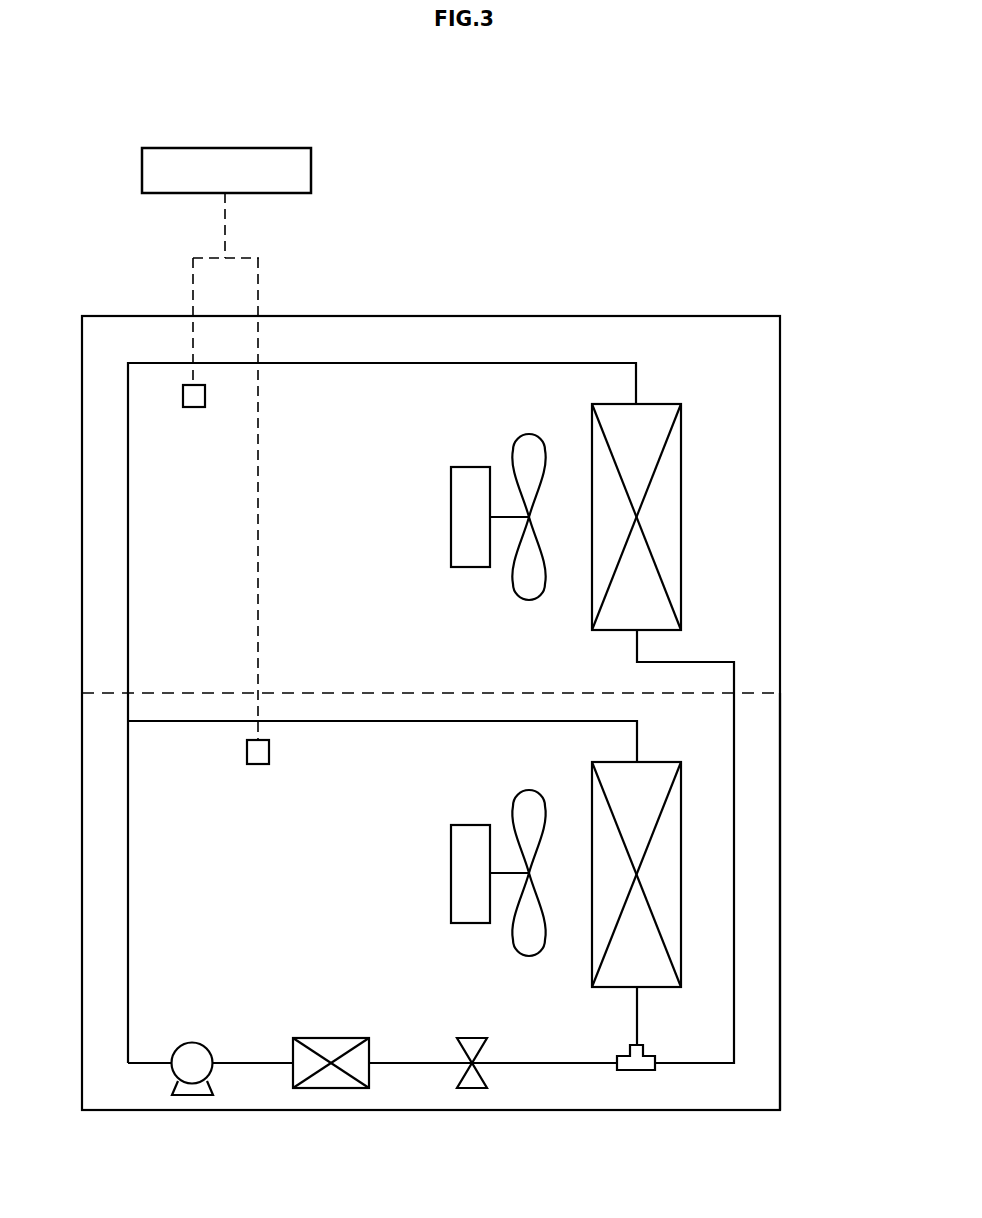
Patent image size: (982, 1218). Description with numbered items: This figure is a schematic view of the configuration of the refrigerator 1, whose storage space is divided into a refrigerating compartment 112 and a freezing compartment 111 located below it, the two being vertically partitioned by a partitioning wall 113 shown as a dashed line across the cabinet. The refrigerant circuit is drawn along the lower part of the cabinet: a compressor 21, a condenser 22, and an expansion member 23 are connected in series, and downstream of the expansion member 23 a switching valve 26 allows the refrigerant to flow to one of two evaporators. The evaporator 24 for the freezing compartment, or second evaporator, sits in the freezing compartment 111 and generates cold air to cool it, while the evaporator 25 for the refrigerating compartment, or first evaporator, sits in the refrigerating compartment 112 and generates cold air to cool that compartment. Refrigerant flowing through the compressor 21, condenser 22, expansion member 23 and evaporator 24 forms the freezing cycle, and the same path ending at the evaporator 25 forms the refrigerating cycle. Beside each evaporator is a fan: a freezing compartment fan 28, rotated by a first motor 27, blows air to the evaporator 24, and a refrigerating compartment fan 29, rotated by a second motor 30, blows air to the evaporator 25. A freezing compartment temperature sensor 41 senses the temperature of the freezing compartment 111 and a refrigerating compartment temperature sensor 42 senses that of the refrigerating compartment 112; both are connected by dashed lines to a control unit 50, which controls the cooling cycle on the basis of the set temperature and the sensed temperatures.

The refrigerator 1 is at (637, 268).
The refrigerating compartment 112 is at (749, 328).
The partitioning wall 113 is at (690, 693).
The freezing compartment 111 is at (781, 716).
The control unit 50 is at (226, 148).
The refrigerating compartment temperature sensor 42 is at (194, 407).
The freezing compartment temperature sensor 41 is at (247, 753).
The evaporator for a refrigerating compartment 25 is at (681, 510).
The evaporator for a freezing compartment 24 is at (681, 873).
The second motor 30 is at (470, 467).
The refrigerating compartment fan 29 is at (529, 430).
The first motor 27 is at (470, 825).
The freezing compartment fan 28 is at (529, 788).
The compressor 21 is at (198, 1042).
The condenser 22 is at (330, 1038).
The expansion member 23 is at (472, 1038).
The switching valve 26 is at (639, 1072).